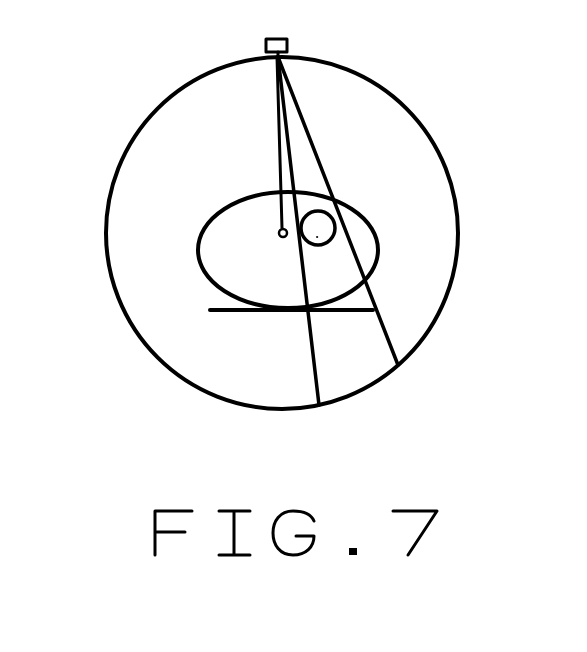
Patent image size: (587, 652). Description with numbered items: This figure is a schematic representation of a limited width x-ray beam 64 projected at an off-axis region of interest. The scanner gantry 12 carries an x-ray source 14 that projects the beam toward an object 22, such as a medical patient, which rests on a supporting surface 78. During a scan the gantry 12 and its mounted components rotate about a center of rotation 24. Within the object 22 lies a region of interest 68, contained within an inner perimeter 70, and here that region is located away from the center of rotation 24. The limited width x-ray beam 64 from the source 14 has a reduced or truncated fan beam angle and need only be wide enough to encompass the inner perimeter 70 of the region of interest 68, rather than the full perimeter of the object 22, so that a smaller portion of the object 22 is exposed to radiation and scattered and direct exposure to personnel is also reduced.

The gantry 12 is at (455, 190).
The x-ray source 14 is at (280, 38).
The object 22 is at (243, 225).
The center of rotation 24 is at (275, 198).
The limited width x-ray beam 64 is at (312, 308).
The region of interest 68 is at (317, 237).
The inner perimeter 70 is at (326, 212).
The surface 78 is at (335, 312).